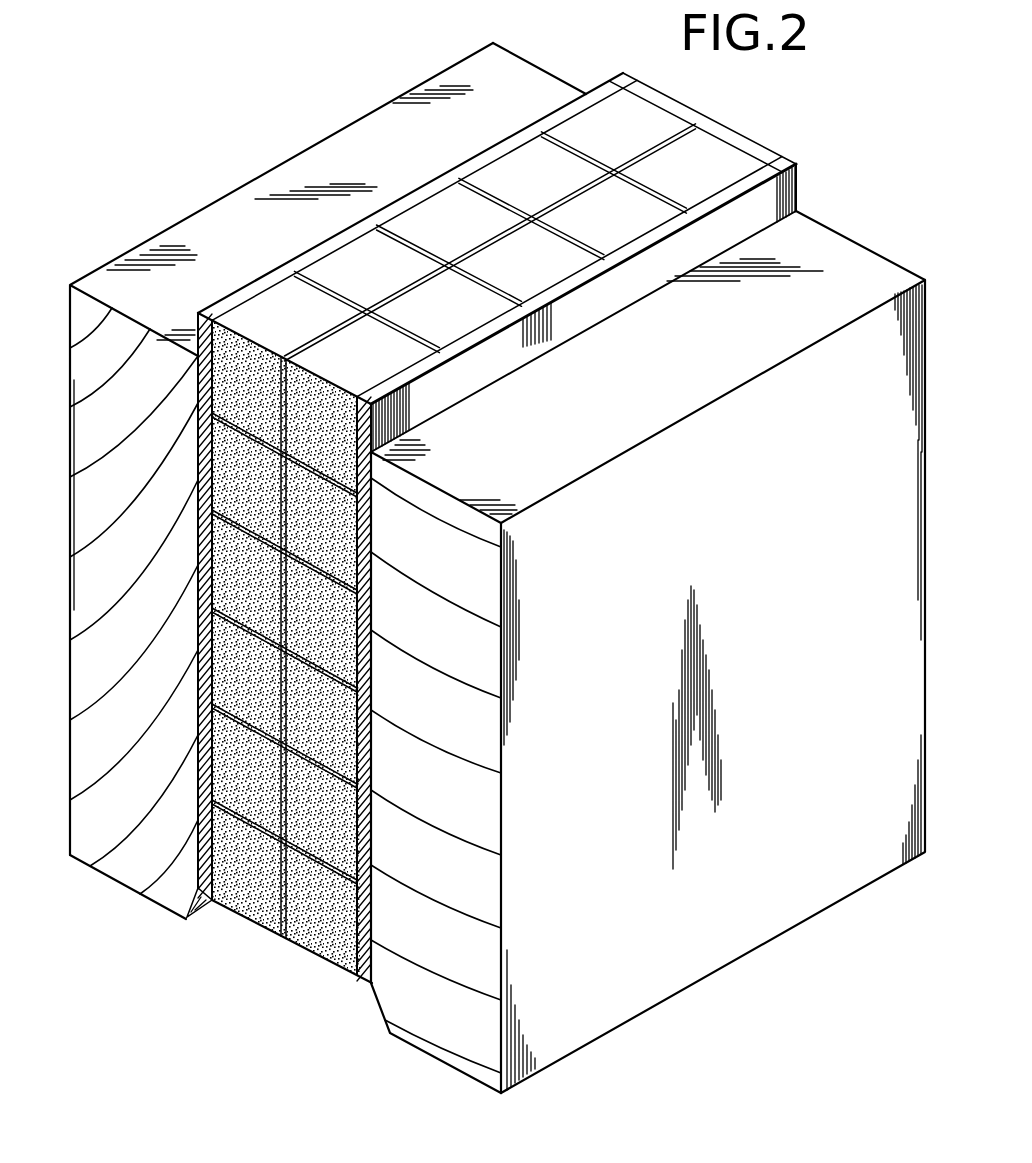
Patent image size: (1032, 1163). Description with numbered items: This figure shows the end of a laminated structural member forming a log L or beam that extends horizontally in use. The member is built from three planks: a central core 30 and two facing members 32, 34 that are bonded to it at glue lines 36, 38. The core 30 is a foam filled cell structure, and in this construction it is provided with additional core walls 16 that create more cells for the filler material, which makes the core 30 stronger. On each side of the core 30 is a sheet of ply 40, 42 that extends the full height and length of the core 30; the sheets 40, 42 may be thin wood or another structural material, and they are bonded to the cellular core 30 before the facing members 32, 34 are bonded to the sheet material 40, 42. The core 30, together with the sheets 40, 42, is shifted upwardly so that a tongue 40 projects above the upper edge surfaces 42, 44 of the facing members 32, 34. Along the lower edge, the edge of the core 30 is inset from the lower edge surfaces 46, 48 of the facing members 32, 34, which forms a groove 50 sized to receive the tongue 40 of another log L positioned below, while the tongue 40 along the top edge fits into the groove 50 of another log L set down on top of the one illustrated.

The core walls 16 is at (437, 252).
The core 30 is at (252, 947).
The facing member 32 is at (87, 812).
The facing member 34 is at (586, 1027).
The glue line 36 is at (197, 578).
The glue line 38 is at (372, 680).
The sheet of ply 40 is at (310, 253).
The sheet of ply 42 is at (322, 155).
The edge surface 44 is at (767, 347).
The lower edge surface 46 is at (130, 886).
The lower edge surface 48 is at (428, 1053).
The groove 50 is at (310, 968).
The log L is at (204, 945).